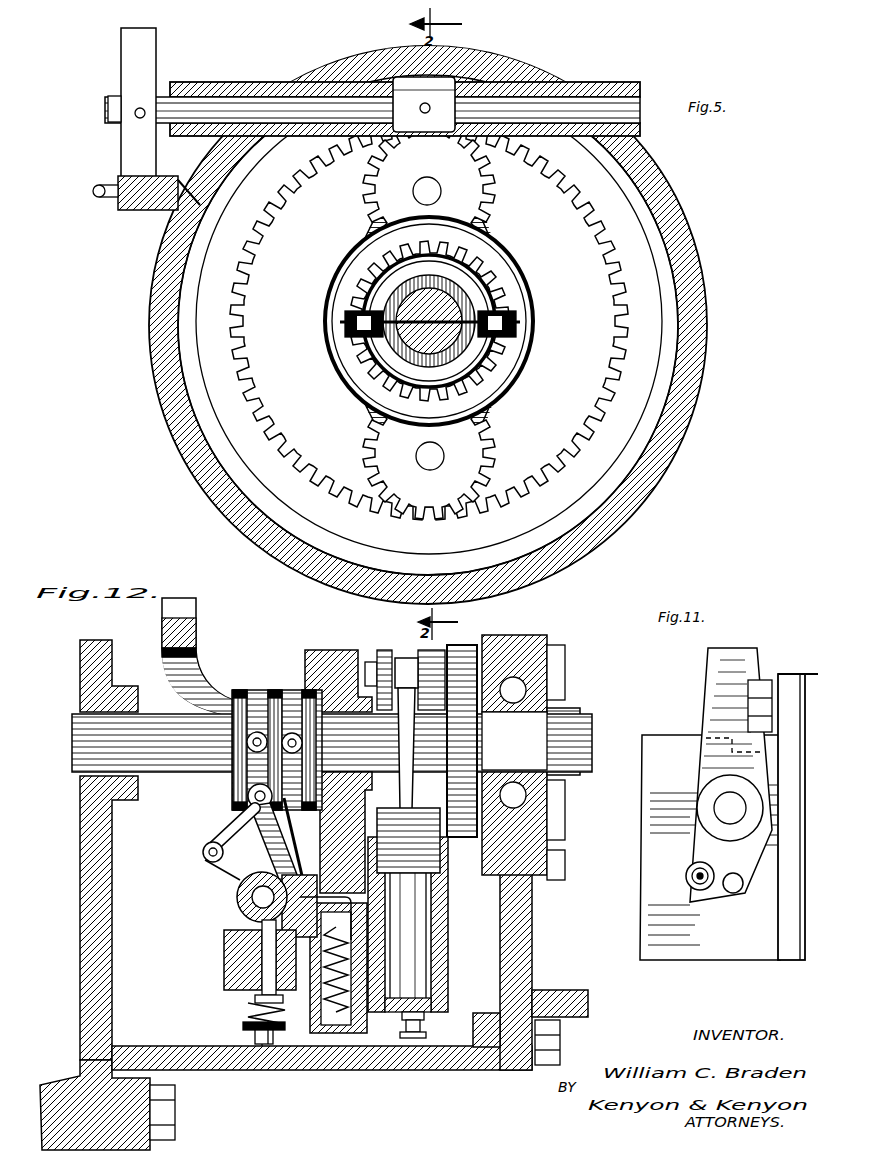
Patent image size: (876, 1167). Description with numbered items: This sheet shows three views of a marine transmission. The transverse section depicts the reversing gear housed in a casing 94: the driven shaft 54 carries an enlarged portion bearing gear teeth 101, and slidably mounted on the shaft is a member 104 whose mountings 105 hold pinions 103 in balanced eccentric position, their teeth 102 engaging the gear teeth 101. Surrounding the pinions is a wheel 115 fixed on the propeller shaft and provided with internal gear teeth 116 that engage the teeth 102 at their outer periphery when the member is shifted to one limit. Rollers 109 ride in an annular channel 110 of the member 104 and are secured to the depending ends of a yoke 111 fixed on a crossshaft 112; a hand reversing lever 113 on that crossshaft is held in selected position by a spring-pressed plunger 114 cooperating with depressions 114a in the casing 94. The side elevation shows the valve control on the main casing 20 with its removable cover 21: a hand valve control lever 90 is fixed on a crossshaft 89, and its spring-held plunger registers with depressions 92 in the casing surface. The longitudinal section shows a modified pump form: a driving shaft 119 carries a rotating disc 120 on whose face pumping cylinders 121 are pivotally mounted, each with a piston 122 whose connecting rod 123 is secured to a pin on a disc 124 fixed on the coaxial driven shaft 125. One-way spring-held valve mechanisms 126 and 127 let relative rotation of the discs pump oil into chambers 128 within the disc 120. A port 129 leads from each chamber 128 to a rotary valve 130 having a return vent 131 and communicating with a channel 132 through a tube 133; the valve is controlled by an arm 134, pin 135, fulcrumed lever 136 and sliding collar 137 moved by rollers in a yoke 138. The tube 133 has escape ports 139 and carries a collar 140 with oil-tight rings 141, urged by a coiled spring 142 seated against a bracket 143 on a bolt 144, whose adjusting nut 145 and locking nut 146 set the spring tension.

In FIG. 5, the casing 94 is at (706, 313).
In FIG. 5, the internal gear teeth 116 is at (232, 378).
In FIG. 5, the wheel 115 is at (232, 338).
In FIG. 5, the yoke 111 is at (429, 321).
In FIG. 5, the mountings 105 is at (380, 218).
In FIG. 5, the pinions 103 is at (490, 196).
In FIG. 5, the teeth 102 is at (498, 213).
In FIG. 5, the driven shaft 54 is at (495, 308).
In FIG. 5, the gear teeth 101 is at (500, 385).
In FIG. 5, the annular channel 110 is at (490, 358).
In FIG. 5, the member 104 is at (520, 345).
In FIG. 5, the rollers 109 is at (512, 318).
In FIG. 5, the crossshaft 112 is at (632, 104).
In FIG. 5, the hand reversing lever 113 is at (152, 50).
In FIG. 5, the spring-pressed plunger 114 is at (160, 208).
In FIG. 5, the depressions 114a is at (172, 216).
In FIG. 12, the casing 20 is at (444, 1074).
In FIG. 11, the casing 20 is at (650, 904).
In FIG. 12, the driven shaft 125 is at (563, 740).
In FIG. 12, the yoke 138 is at (196, 660).
In FIG. 12, the driving shaft 119 is at (170, 778).
In FIG. 12, the rotating disc 120 is at (310, 665).
In FIG. 12, the sliding collar 137 is at (273, 692).
In FIG. 12, the disc 124 is at (462, 652).
In FIG. 12, the connecting rods 123 is at (411, 773).
In FIG. 12, the pumping cylinders 121 is at (448, 905).
In FIG. 12, the piston 122 is at (448, 849).
In FIG. 12, the one-way spring-held valve mechanism 126 is at (426, 1020).
In FIG. 12, the chambers 128 is at (332, 1036).
In FIG. 12, the one-way spring-held valve mechanism 127 is at (356, 1040).
In FIG. 12, the port 129 is at (286, 826).
In FIG. 12, the return vent 131 is at (240, 892).
In FIG. 12, the fulcrumed lever 136 is at (236, 805).
In FIG. 12, the pin 135 is at (208, 845).
In FIG. 12, the arm 134 is at (218, 866).
In FIG. 12, the channel 132 is at (238, 922).
In FIG. 12, the rotary valve 130 is at (238, 902).
In FIG. 12, the tube 133 is at (232, 944).
In FIG. 12, the collar 140 is at (228, 960).
In FIG. 12, the oil-tight rings 141 is at (236, 978).
In FIG. 12, the ports 139 is at (238, 997).
In FIG. 12, the coiled spring 142 is at (240, 1006).
In FIG. 12, the bolt 144 is at (243, 1024).
In FIG. 12, the bracket 143 is at (253, 1034).
In FIG. 12, the adjusting nut 145 is at (250, 1046).
In FIG. 12, the locking nut 146 is at (270, 1046).
In FIG. 11, the removable cover 21 is at (653, 733).
In FIG. 11, the hand valve control lever 90 is at (716, 687).
In FIG. 11, the crossshaft 89 is at (728, 808).
In FIG. 11, the depressions 92 is at (712, 893).